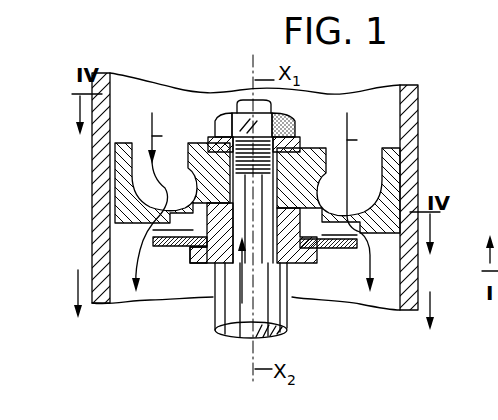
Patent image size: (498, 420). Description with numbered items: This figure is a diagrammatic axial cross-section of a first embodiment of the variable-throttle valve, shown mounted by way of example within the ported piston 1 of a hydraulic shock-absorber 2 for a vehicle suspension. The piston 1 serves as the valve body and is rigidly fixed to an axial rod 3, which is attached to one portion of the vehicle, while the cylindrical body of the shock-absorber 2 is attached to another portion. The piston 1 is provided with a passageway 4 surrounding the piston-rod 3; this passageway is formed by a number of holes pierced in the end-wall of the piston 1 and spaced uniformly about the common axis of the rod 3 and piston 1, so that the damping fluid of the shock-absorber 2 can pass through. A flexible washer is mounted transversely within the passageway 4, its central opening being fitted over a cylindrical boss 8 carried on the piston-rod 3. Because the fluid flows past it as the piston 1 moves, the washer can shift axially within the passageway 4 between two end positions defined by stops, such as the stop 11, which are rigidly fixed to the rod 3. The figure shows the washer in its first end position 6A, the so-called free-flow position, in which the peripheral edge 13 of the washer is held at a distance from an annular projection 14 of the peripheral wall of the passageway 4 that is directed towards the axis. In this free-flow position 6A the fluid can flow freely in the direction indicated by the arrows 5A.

The ported piston 1 is at (312, 110).
The hydraulic shock-absorber 2 is at (428, 110).
The axial rod 3 is at (235, 327).
The passageway 4 is at (136, 126).
The arrows of free fluid flow 5A is at (257, 202).
The free-flow end position of the washer 6A is at (355, 300).
The cylindrical boss 8 is at (327, 250).
The stop 11 is at (190, 265).
The peripheral edge of the washer 13 is at (153, 246).
The annular projection 14 is at (362, 198).